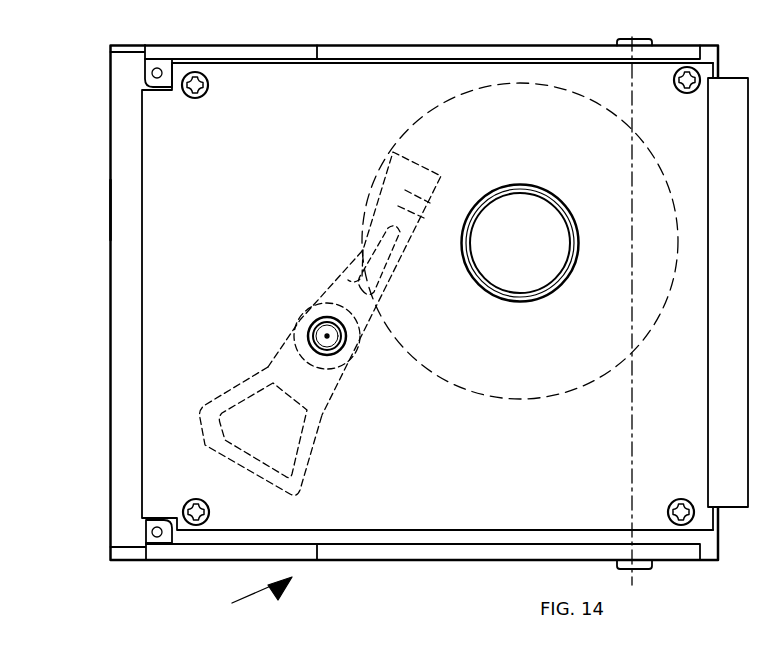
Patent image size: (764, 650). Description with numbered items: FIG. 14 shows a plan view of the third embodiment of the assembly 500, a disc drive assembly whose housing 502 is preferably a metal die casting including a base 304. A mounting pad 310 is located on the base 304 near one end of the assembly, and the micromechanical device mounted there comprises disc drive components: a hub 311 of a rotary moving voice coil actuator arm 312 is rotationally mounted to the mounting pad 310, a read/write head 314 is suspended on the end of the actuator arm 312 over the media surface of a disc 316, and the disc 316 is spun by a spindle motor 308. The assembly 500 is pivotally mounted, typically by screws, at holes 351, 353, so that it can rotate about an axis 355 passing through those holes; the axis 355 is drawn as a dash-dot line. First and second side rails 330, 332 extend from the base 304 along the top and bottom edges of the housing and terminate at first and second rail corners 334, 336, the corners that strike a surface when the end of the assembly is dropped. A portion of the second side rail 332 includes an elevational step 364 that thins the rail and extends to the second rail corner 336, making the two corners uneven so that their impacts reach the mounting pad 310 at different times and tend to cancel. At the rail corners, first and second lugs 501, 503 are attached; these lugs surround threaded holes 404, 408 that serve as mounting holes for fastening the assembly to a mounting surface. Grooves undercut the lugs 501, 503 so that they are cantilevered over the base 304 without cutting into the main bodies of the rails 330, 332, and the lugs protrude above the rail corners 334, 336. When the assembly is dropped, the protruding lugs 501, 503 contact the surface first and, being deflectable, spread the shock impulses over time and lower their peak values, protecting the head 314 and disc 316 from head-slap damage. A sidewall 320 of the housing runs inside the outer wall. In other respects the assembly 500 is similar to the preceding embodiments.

The base 304 is at (124, 276).
The spindle motor 308 is at (567, 208).
The mounting pad 310 is at (347, 342).
The hub 311 is at (297, 337).
The actuator arm 312 is at (333, 397).
The read/write head 314 is at (437, 180).
The disc 316 is at (500, 400).
The inner sidewall 320 is at (141, 190).
The first side rail 330 is at (410, 50).
The second side rail 332 is at (465, 553).
The first rail corner 334 is at (112, 52).
The second rail corner 336 is at (147, 551).
The hole 351 is at (633, 38).
The hole 353 is at (633, 568).
The axis 355 is at (633, 328).
The elevational step 364 is at (258, 553).
The threaded hole 404 is at (150, 527).
The threaded hole 408 is at (147, 73).
The assembly 500 is at (239, 596).
The first lug 501 is at (165, 541).
The housing 502 is at (109, 205).
The second lug 503 is at (157, 84).